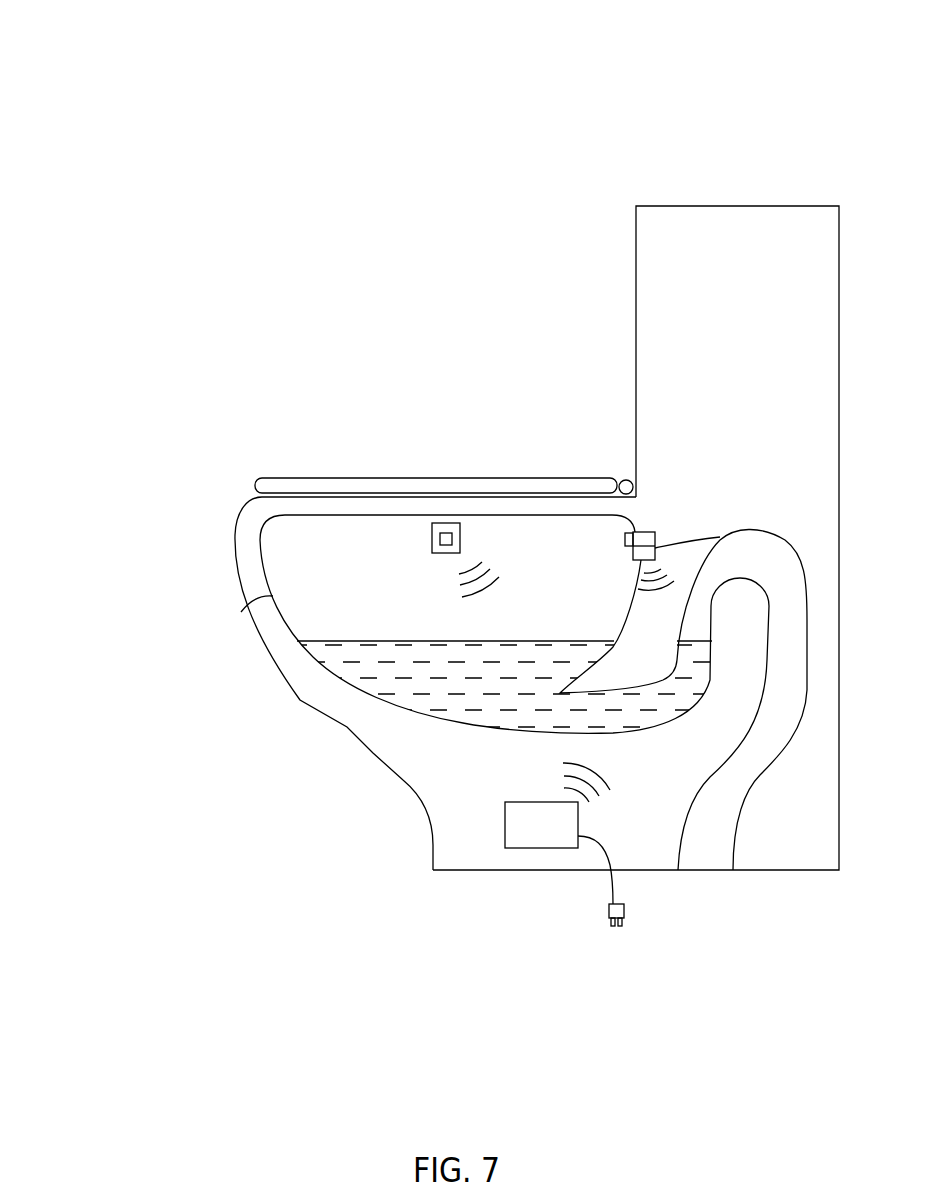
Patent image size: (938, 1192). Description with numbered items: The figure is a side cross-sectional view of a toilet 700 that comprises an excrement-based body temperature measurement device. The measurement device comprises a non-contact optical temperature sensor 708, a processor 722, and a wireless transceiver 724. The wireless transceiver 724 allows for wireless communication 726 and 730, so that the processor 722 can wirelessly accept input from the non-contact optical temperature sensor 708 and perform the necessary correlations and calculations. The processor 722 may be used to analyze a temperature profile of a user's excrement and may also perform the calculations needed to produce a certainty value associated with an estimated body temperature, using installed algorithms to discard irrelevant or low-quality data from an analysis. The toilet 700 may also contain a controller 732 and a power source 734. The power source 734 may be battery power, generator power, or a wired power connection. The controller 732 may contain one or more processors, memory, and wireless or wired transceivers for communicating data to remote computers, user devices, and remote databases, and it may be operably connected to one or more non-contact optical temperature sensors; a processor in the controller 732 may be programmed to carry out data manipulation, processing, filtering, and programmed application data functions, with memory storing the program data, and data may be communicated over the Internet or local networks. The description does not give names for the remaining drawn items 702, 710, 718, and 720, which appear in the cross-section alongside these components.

The toilet 700 is at (112, 59).
The toilet seat lid 702 is at (422, 478).
The non-contact optical temperature sensor 708 is at (432, 540).
The sensor connector 710 is at (625, 539).
The water 718 is at (494, 697).
The bowl rim 720 is at (243, 606).
The processor 722 is at (658, 532).
The wireless transceiver 724 is at (716, 538).
The wireless communication 726 is at (645, 593).
The wireless communication 730 is at (500, 572).
The controller 732 is at (522, 833).
The power source 734 is at (627, 912).